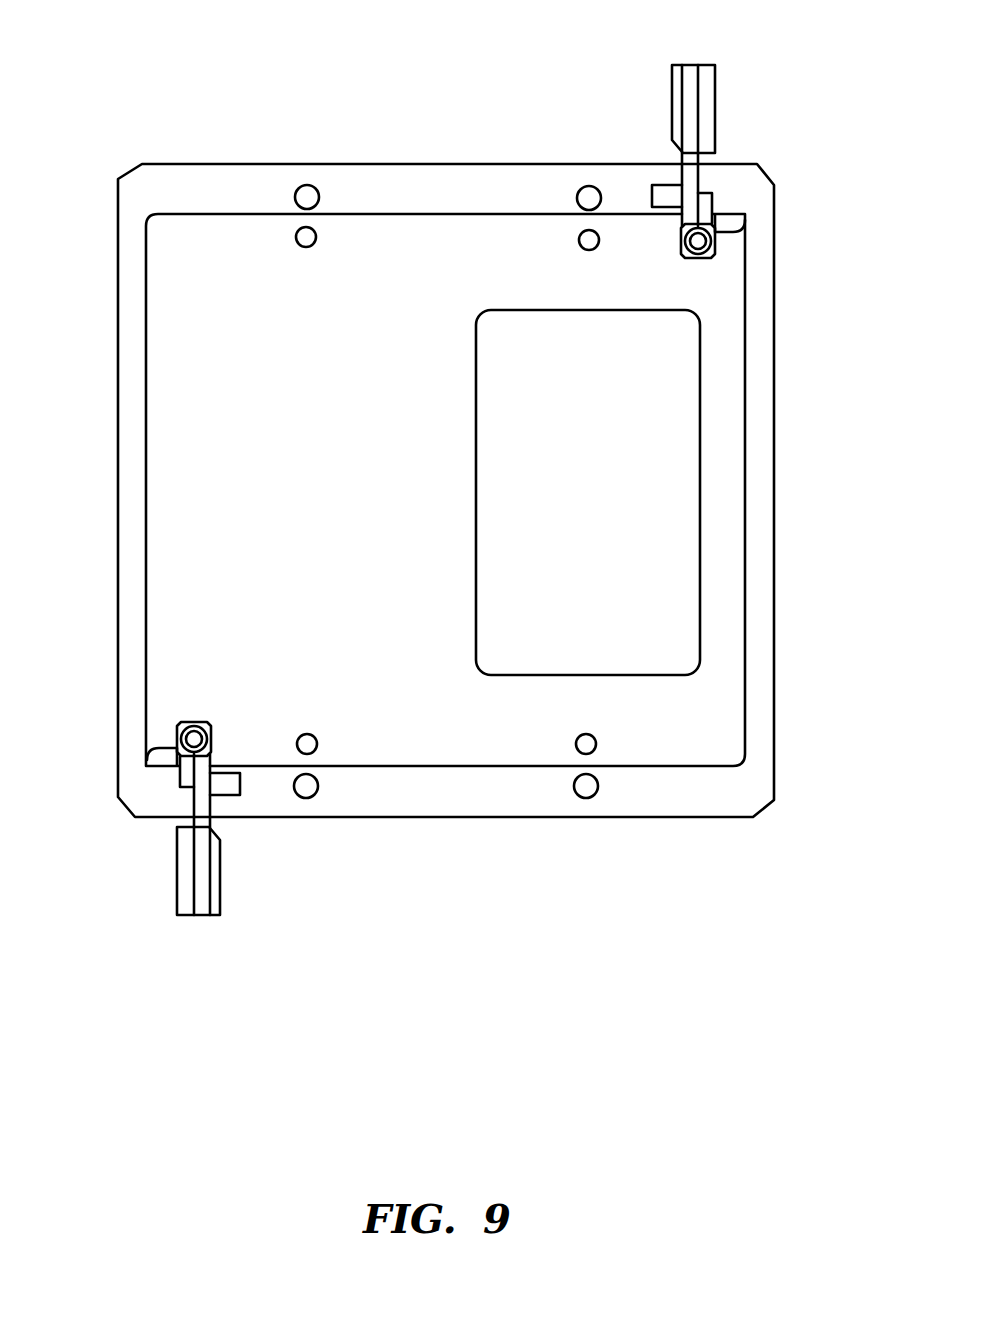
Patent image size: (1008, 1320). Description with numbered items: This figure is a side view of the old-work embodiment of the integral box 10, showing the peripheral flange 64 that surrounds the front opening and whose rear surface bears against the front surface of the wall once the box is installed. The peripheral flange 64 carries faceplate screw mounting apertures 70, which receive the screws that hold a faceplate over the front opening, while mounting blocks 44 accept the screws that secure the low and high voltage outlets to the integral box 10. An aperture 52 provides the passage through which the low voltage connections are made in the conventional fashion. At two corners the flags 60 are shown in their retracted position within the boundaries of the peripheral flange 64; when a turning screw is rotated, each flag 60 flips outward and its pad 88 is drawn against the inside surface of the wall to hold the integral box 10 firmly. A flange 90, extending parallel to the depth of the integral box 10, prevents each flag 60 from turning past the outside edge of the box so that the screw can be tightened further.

The integral box 10 is at (472, 490).
The mounting blocks 44 is at (308, 237).
The aperture 52 is at (655, 528).
The flag 60 is at (444, 551).
The peripheral flange 64 is at (755, 327).
The faceplate screw mounting apertures 70 is at (307, 192).
The pad 88 is at (702, 80).
The flange 90 is at (748, 228).